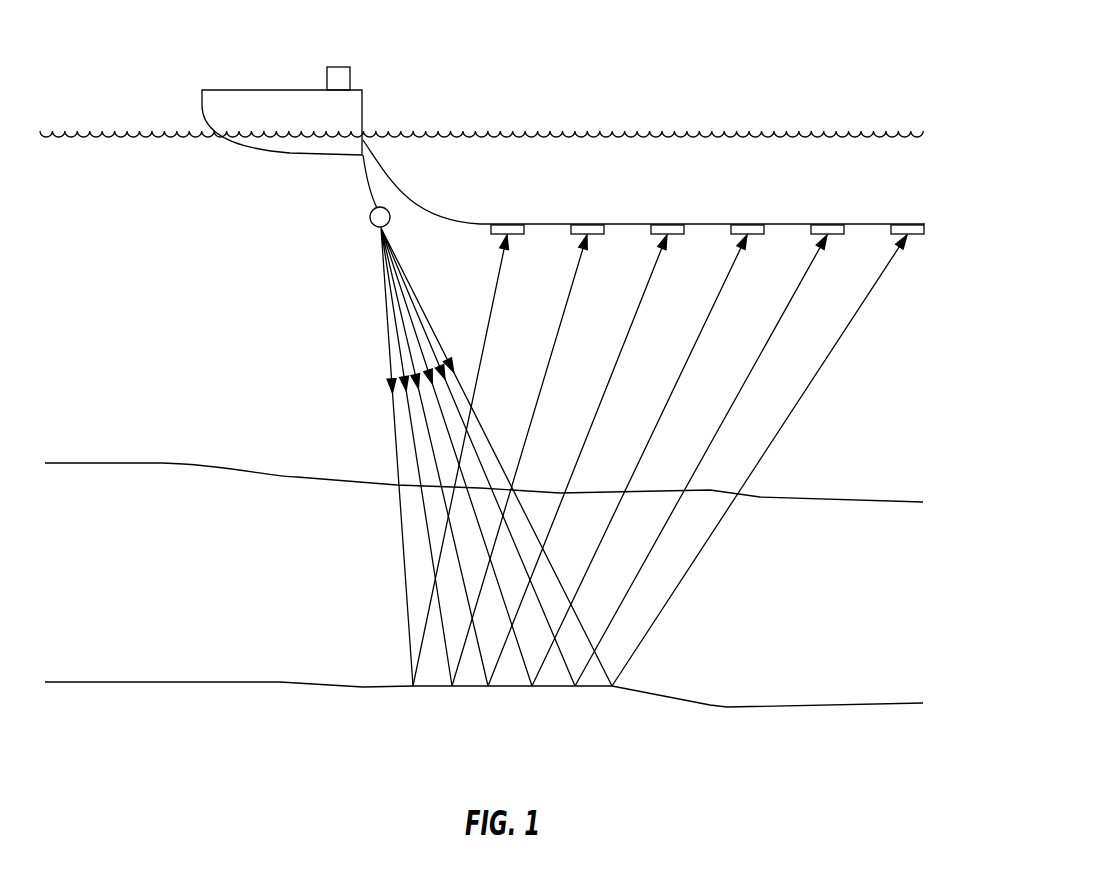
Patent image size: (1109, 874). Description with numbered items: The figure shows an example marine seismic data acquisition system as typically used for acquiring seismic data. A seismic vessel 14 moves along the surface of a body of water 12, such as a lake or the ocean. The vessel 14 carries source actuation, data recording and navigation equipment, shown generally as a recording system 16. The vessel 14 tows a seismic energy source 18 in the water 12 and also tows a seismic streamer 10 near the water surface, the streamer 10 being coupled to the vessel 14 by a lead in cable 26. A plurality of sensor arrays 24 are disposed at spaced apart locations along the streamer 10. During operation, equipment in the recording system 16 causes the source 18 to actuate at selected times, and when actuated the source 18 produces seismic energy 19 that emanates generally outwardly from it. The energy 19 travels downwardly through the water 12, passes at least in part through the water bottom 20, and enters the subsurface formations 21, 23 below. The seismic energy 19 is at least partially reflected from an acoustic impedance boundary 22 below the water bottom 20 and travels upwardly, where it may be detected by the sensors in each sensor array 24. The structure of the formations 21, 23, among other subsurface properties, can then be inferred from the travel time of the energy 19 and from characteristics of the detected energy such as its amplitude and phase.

The seismic streamer 10 is at (463, 230).
The body of water 12 is at (208, 287).
The seismic vessel 14 is at (277, 90).
The recording system 16 is at (340, 67).
The seismic energy source 18 is at (369, 216).
The seismic energy 19 is at (362, 292).
The water bottom 20 is at (120, 462).
The subsurface formation 21 is at (208, 575).
The acoustic impedance boundary 22 is at (125, 681).
The subsurface formation 23 is at (208, 750).
The sensor array 24 is at (508, 223).
The lead in cable 26 is at (412, 193).